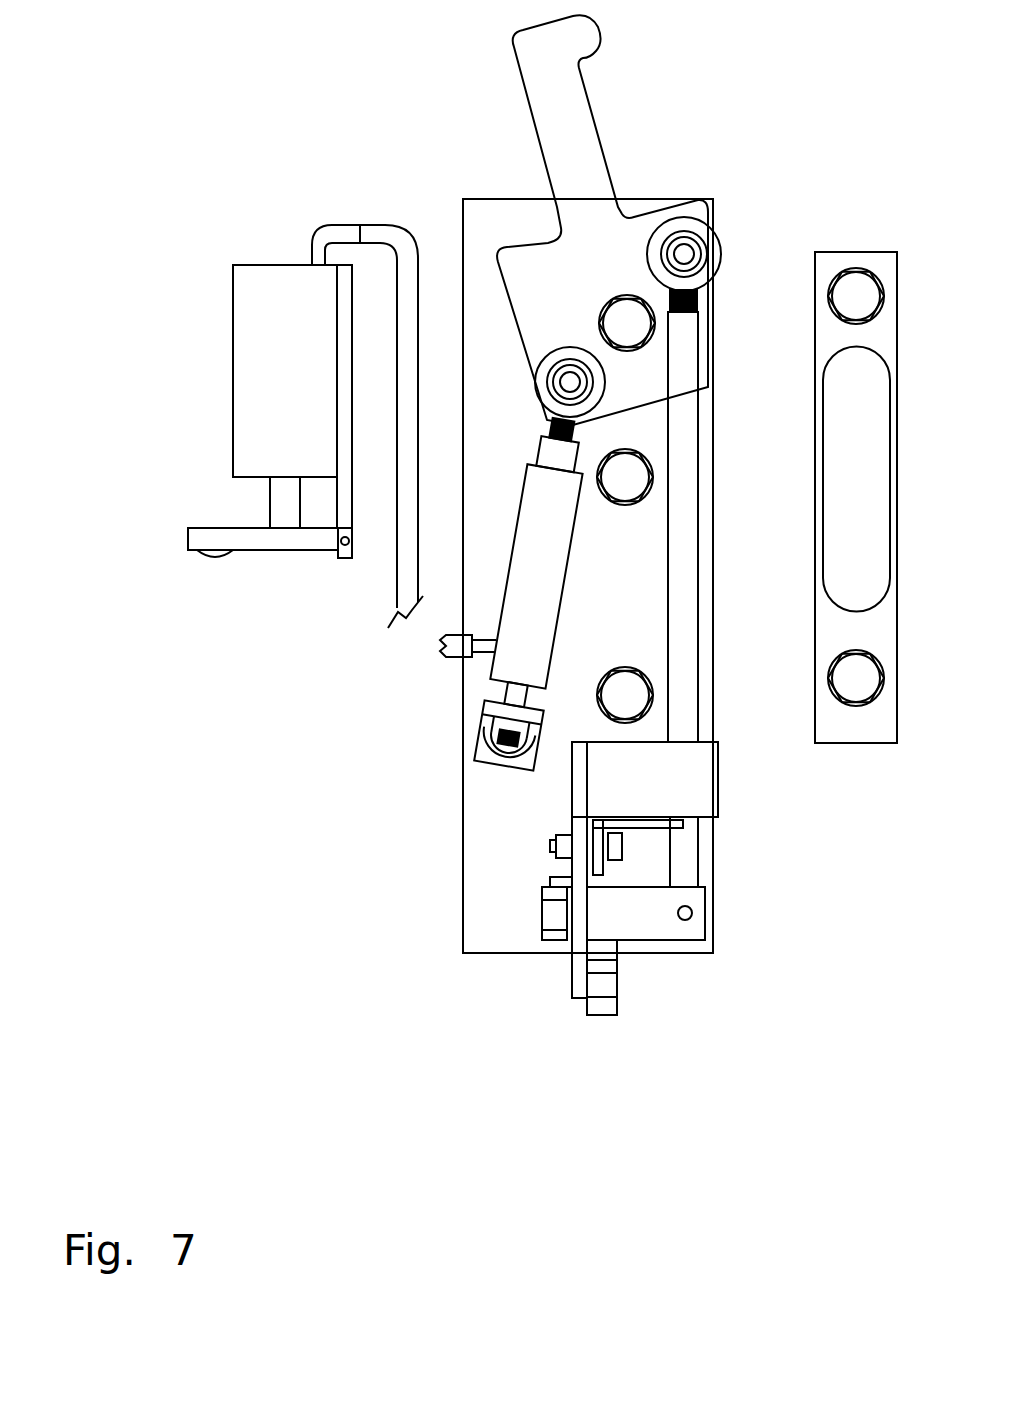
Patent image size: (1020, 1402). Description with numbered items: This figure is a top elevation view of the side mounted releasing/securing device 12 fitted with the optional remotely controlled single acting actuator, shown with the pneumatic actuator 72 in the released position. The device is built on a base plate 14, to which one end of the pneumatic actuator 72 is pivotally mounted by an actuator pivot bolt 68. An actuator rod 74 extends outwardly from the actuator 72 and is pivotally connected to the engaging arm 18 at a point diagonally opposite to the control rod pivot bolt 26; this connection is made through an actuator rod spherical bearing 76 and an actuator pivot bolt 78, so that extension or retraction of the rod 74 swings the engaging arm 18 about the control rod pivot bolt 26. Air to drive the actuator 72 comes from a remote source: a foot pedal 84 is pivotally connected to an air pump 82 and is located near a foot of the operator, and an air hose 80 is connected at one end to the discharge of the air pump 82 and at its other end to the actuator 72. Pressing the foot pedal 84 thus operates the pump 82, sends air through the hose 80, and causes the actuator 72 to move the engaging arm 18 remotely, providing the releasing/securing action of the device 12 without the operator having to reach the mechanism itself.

The side mounted releasing/securing device 12 is at (452, 172).
The base plate 14 is at (522, 818).
The engaging arm 18 is at (590, 190).
The control rod pivot bolt 26 is at (684, 254).
The actuator pivot bolt 68 is at (505, 728).
The pneumatic actuator 72 is at (540, 578).
The actuator rod 74 is at (562, 460).
The actuator rod spherical bearing 76 is at (547, 402).
The actuator pivot bolt 78 is at (570, 381).
The air hose 80 is at (457, 647).
The air pump 82 is at (275, 338).
The foot pedal 84 is at (215, 555).